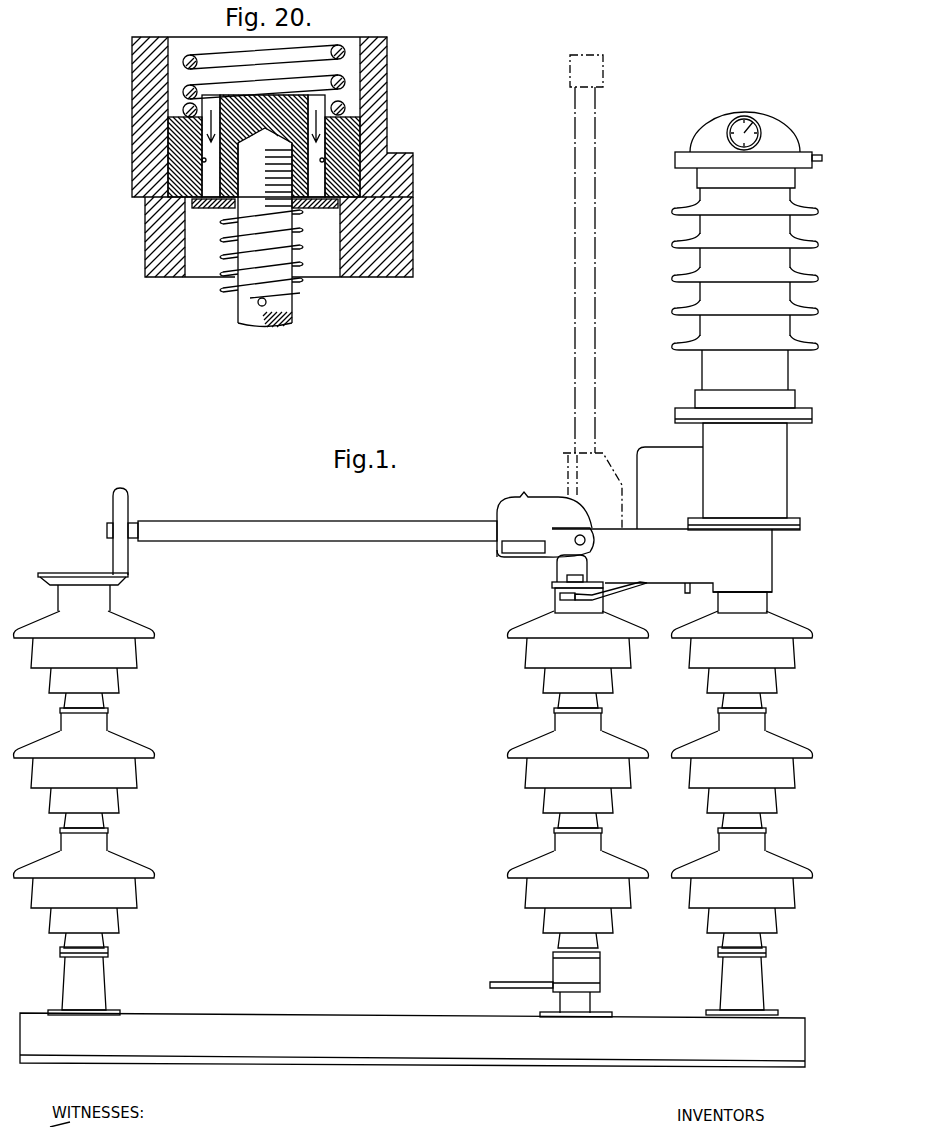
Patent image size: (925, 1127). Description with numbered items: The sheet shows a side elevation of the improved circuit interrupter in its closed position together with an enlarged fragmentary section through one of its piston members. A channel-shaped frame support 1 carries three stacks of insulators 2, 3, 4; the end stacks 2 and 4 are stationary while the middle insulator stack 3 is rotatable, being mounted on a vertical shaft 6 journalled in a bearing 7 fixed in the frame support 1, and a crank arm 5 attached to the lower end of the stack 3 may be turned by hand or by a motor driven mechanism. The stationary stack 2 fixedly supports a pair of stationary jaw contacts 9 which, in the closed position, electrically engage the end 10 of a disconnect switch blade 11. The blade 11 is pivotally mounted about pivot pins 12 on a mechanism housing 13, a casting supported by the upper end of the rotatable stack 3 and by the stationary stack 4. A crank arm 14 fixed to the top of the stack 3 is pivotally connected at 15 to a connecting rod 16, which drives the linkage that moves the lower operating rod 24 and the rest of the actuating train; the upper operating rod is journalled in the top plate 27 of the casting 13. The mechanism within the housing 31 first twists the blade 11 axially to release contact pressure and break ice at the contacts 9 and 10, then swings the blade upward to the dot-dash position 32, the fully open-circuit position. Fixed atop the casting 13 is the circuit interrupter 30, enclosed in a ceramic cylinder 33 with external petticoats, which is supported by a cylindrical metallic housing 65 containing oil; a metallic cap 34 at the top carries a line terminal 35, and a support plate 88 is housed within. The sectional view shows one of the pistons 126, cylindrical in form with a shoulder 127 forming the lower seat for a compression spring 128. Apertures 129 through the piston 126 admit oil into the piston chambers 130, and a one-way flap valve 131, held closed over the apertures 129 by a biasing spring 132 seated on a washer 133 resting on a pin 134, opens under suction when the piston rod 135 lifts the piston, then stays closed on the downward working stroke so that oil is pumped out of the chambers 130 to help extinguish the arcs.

In FIG. 1, the frame support 1 is at (340, 1013).
In FIG. 1, the insulator stack 2 is at (140, 749).
In FIG. 1, the insulator stack 3 is at (506, 762).
In FIG. 1, the insulator stack 4 is at (780, 748).
In FIG. 1, the crank arm 5 is at (508, 985).
In FIG. 1, the vertical shaft 6 is at (597, 1005).
In FIG. 1, the bearing 7 is at (604, 1015).
In FIG. 1, the stationary jaw contacts 9 is at (128, 556).
In FIG. 1, the end of disconnect switch blade 10 is at (131, 530).
In FIG. 1, the disconnect switch blade 11 is at (336, 522).
In FIG. 1, the pivot pins 12 is at (587, 544).
In FIG. 1, the mechanism housing 13 is at (649, 537).
In FIG. 1, the crank arm 14 is at (553, 598).
In FIG. 1, the pivotal connection 15 is at (569, 603).
In FIG. 1, the connecting rod 16 is at (626, 588).
In FIG. 1, the lower operating rod 24 is at (692, 592).
In FIG. 1, the top plate 27 is at (797, 532).
In FIG. 1, the circuit interrupter 30 is at (657, 268).
In FIG. 1, the housing 31 is at (536, 502).
In FIG. 1, the dot-dash position 32 is at (598, 156).
In FIG. 1, the ceramic cylinder 33 is at (673, 214).
In FIG. 1, the cap 34 is at (773, 116).
In FIG. 1, the line terminal 35 is at (817, 152).
In FIG. 1, the cylindrical metallic housing 65 is at (787, 476).
In FIG. 1, the support plate 88 is at (794, 520).
In FIG. 20, the piston 126 is at (366, 135).
In FIG. 20, the shoulder 127 is at (386, 90).
In FIG. 20, the compression spring 128 is at (337, 45).
In FIG. 20, the apertures 129 is at (362, 150).
In FIG. 20, the piston chambers 130 is at (362, 72).
In FIG. 20, the flap valve 131 is at (322, 211).
In FIG. 20, the biasing spring 132 is at (294, 270).
In FIG. 20, the washer 133 is at (228, 292).
In FIG. 20, the pin 134 is at (262, 307).
In FIG. 20, the piston rod 135 is at (288, 312).